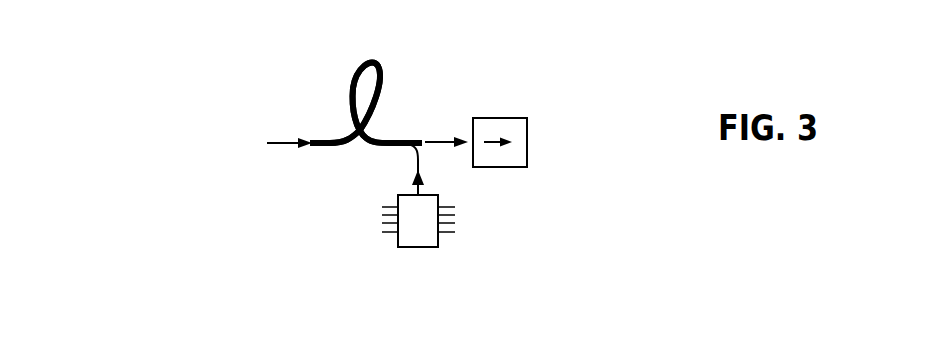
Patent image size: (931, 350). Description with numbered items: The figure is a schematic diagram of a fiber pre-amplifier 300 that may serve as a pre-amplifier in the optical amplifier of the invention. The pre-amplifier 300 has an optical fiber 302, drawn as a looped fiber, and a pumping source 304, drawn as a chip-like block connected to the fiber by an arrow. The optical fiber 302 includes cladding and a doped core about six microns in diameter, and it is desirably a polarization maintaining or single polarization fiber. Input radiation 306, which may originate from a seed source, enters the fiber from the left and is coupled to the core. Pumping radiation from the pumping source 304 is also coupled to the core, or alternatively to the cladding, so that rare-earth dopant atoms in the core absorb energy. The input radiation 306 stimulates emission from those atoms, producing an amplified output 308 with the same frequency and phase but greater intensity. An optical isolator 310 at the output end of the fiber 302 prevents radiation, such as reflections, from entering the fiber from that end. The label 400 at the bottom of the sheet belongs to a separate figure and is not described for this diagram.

The fiber pre-amplifier 300 is at (116, 91).
The optical fiber 302 is at (376, 65).
The pumping source 304 is at (418, 247).
The input radiation 306 is at (268, 142).
The amplified output 308 is at (443, 137).
The optical isolator 310 is at (502, 118).
The system (FIG. 4) 400 is at (110, 349).